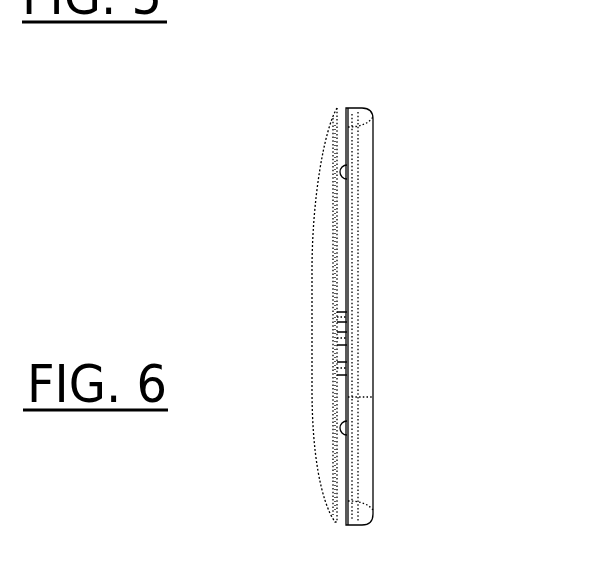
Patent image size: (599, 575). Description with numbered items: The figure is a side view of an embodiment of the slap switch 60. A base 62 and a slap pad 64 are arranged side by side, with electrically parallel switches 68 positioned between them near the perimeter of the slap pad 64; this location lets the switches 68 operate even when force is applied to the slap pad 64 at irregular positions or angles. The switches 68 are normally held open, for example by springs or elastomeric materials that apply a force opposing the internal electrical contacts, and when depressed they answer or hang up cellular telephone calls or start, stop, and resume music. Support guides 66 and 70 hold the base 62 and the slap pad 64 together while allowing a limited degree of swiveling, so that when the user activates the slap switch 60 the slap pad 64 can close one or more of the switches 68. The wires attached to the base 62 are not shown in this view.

The slap switch 60 is at (378, 92).
The base 62 is at (373, 213).
The slap pad 64 is at (313, 282).
The support guide 66 is at (337, 340).
The switches 68 is at (338, 172).
The support guide 70 is at (337, 317).